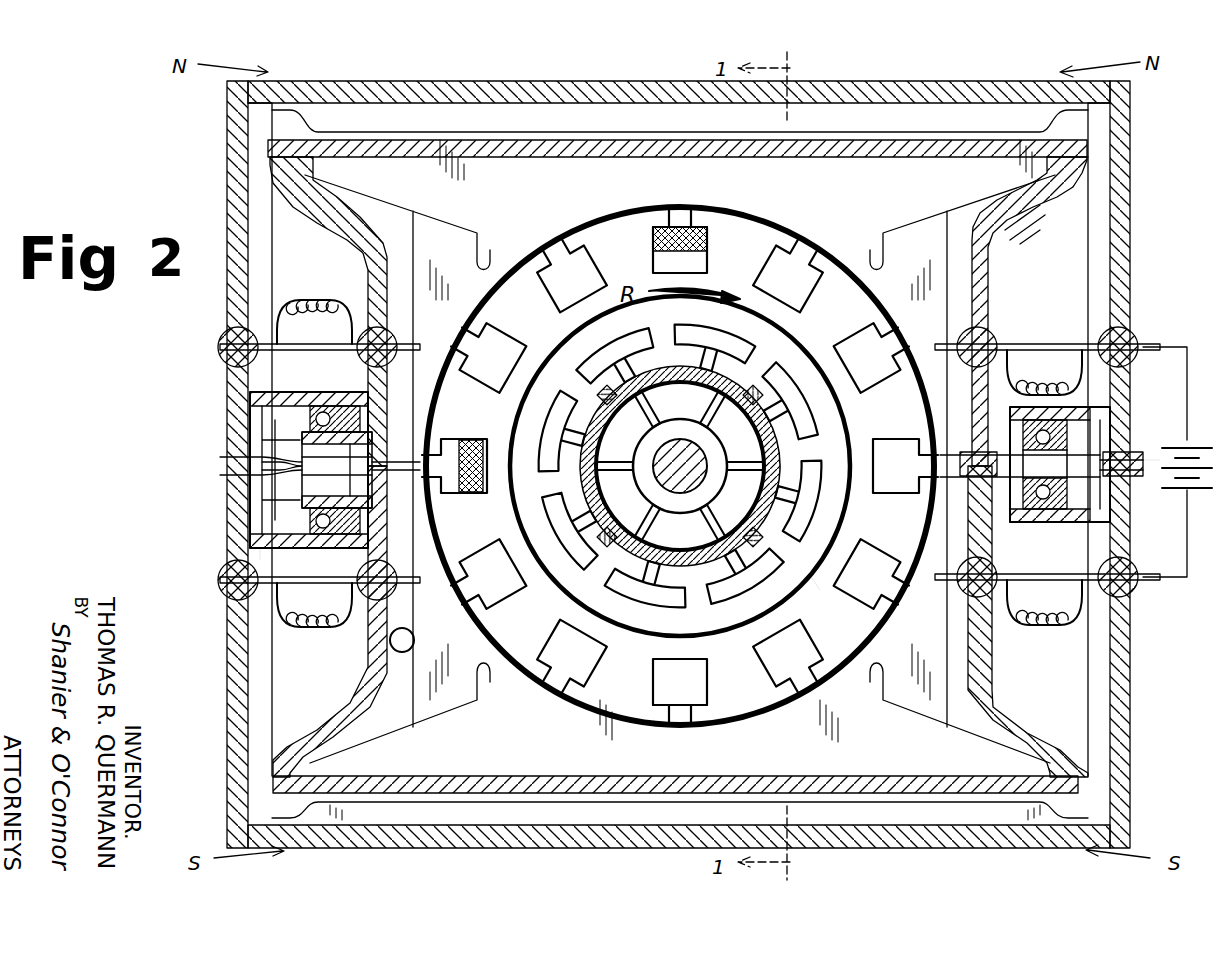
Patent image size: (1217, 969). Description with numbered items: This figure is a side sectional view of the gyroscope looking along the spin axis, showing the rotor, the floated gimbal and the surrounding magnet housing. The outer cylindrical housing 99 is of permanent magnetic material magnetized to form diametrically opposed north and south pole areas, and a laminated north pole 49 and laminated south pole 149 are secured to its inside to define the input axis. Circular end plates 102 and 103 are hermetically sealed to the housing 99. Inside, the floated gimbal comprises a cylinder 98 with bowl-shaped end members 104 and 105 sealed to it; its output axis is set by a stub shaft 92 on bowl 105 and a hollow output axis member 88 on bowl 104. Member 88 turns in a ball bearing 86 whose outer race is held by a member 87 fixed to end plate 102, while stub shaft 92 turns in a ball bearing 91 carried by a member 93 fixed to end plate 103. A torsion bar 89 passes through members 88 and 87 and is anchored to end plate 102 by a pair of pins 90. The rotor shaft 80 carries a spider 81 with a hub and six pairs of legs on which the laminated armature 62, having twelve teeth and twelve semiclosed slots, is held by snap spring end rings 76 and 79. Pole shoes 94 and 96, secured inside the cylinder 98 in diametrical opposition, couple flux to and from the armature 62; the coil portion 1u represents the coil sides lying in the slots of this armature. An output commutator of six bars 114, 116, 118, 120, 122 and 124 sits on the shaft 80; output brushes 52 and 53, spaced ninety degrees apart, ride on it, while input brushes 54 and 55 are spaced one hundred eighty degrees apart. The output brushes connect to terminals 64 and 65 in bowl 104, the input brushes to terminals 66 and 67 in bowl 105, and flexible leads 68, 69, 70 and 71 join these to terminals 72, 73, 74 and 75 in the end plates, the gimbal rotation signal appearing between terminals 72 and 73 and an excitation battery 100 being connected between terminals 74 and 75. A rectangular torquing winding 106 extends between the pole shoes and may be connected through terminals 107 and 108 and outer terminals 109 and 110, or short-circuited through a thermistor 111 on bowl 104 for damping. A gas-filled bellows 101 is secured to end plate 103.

The coil portion 1u is at (707, 240).
The north pole 49 is at (770, 132).
The output brush 52 is at (602, 356).
The output brush 53 is at (606, 572).
The input brush 54 is at (684, 352).
The input brush 55 is at (676, 580).
The armature 62 is at (760, 708).
The terminal 64 is at (370, 355).
The terminal 65 is at (365, 570).
The terminal 66 is at (998, 338).
The terminal 67 is at (993, 570).
The flexible lead 68 is at (320, 298).
The flexible lead 69 is at (320, 632).
The flexible lead 70 is at (1052, 378).
The flexible lead 71 is at (1045, 628).
The terminal 72 is at (222, 330).
The terminal 73 is at (225, 592).
The terminal 74 is at (1138, 338).
The terminal 75 is at (1138, 588).
The snap spring end ring 76 is at (790, 585).
The snap spring end ring 79 is at (580, 550).
The rotor shaft 80 is at (722, 466).
The spider 81 is at (538, 440).
The ball bearing 86 is at (330, 522).
The member 87 is at (290, 552).
The output axis member 88 is at (318, 505).
The torsion bar 89 is at (250, 445).
The pins 90 is at (290, 415).
The ball bearing 91 is at (1006, 428).
The stub shaft 92 is at (1067, 478).
The member 93 is at (1052, 522).
The pole shoe 94 is at (622, 205).
The pole shoe 96 is at (648, 690).
The cylinder 98 is at (595, 157).
The cylindrical housing 99 is at (470, 82).
The input excitation battery 100 is at (1172, 440).
The bellows 101 is at (1018, 228).
The end plate 102 is at (228, 160).
The end plate 103 is at (1130, 178).
The bowl-shaped end member 104 is at (380, 676).
The bowl-shaped end member 105 is at (992, 670).
The torquing winding 106 is at (418, 270).
The terminal 107 is at (425, 450).
The terminal 108 is at (935, 452).
The terminal 109 is at (222, 475).
The terminal 110 is at (1133, 474).
The thermistor 111 is at (414, 640).
The commutator bar 114 is at (590, 436).
The commutator bar 116 is at (704, 386).
The commutator bar 118 is at (796, 418).
The commutator bar 120 is at (793, 512).
The commutator bar 122 is at (688, 558).
The commutator bar 124 is at (628, 528).
The south pole 149 is at (740, 800).